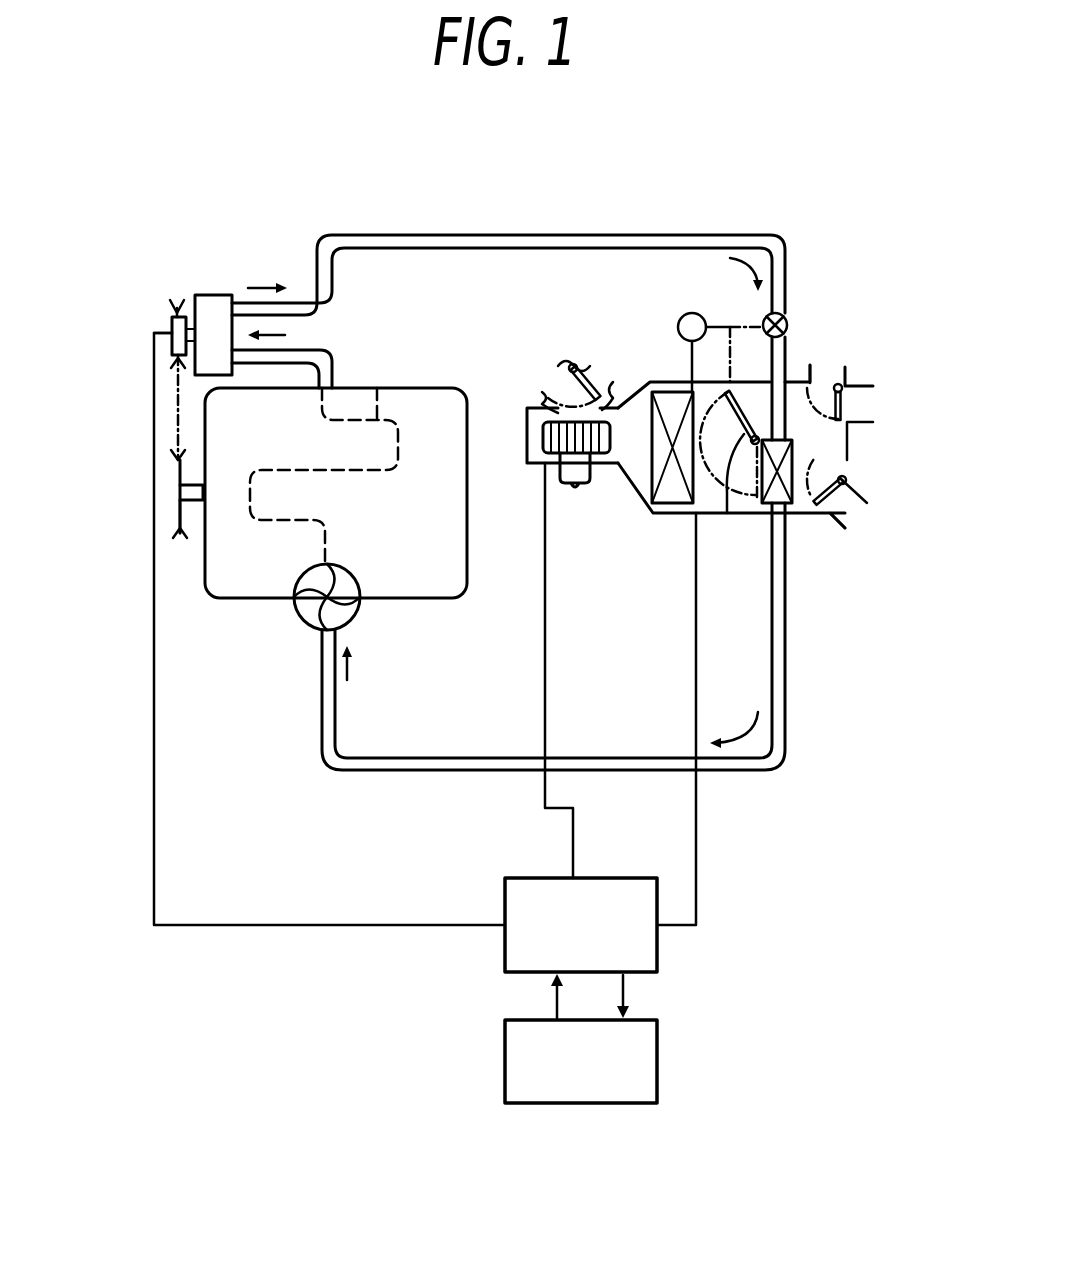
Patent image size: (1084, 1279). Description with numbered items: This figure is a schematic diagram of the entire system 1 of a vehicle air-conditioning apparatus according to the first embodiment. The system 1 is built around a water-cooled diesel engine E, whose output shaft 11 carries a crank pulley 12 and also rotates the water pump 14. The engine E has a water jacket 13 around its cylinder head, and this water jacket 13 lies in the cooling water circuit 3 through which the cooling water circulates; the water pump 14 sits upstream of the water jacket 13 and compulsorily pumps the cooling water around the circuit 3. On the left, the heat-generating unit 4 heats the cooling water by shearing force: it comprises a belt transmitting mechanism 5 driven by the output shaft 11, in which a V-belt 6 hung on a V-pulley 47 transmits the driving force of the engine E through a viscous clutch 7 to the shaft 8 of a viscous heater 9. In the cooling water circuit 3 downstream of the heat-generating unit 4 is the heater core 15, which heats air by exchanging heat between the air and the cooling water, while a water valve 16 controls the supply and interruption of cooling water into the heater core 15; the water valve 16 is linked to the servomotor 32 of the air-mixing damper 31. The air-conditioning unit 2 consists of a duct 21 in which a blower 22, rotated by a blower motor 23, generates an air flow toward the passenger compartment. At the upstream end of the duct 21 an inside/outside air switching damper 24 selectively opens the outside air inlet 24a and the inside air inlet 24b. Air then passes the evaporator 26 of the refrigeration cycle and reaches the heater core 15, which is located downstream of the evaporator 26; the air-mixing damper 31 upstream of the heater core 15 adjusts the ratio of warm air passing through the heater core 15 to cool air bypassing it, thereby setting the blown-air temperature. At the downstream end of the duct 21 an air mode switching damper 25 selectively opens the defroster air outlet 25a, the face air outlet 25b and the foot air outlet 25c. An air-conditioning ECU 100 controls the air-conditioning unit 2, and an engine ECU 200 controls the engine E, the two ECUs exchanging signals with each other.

The entire system 1 is at (232, 210).
The air-conditioning unit 2 is at (562, 340).
The cooling water circuit 3 is at (452, 235).
The heat-generating unit 4 is at (156, 272).
The belt transmitting mechanism 5 is at (72, 377).
The V-belt 6 is at (178, 415).
The viscous clutch 7 is at (172, 347).
The shaft 8 is at (190, 328).
The viscous heater 9 is at (215, 295).
The output shaft 11 is at (193, 500).
The crank pulley 12 is at (180, 512).
The water jacket 13 is at (377, 388).
The water pump 14 is at (308, 625).
The heater core 15 is at (788, 530).
The water valve 16 is at (788, 327).
The duct 21 is at (630, 472).
The blower 22 is at (527, 440).
The blower motor 23 is at (558, 488).
The inside/outside air switching damper 24 is at (597, 358).
The outside air inlet 24a is at (552, 388).
The inside air inlet 24b is at (606, 378).
The air mode switching damper 25 is at (858, 410).
The defroster air outlet 25a is at (822, 377).
The face air outlet 25b is at (862, 412).
The foot air outlet 25c is at (852, 513).
The evaporator 26 is at (670, 505).
The air-mixing damper 31 is at (733, 514).
The servomotor 32 is at (692, 313).
The V-pulley 47 is at (177, 308).
The air-conditioning ECU 100 is at (657, 943).
The engine ECU 200 is at (657, 1060).
The engine E is at (408, 598).